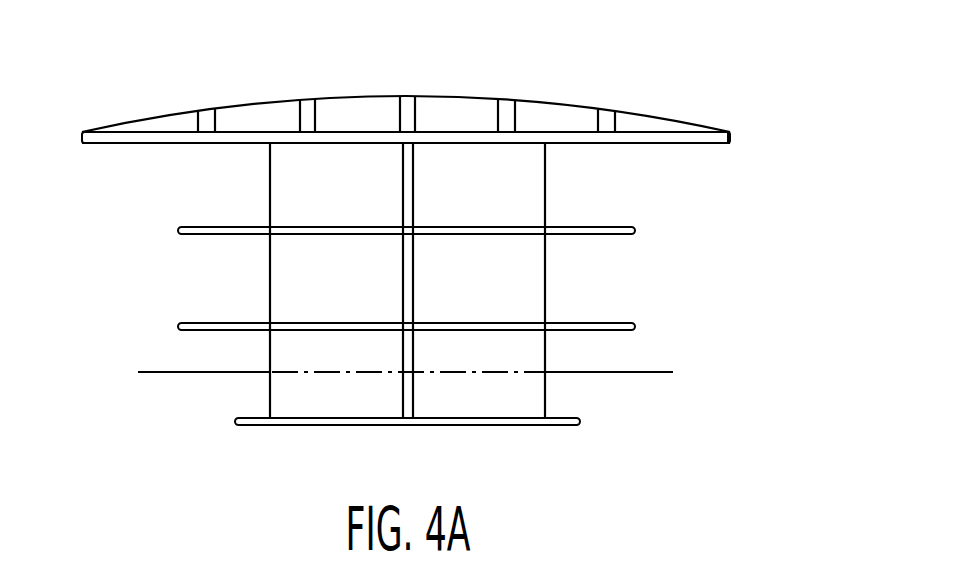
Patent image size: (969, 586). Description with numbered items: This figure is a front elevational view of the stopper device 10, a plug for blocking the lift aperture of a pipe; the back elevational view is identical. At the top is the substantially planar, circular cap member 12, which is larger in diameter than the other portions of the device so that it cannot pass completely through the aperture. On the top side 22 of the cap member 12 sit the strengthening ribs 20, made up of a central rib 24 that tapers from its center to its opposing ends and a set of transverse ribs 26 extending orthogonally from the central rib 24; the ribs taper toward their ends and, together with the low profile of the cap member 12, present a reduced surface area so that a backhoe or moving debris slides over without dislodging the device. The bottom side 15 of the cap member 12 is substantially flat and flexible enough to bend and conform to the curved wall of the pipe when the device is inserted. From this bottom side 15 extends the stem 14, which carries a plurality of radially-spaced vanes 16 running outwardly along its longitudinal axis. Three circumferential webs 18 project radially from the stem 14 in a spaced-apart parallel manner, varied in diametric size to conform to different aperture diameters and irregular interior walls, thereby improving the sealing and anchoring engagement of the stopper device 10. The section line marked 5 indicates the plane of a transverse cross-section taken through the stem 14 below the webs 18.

The stopper device 10 is at (706, 86).
The cap member 12 is at (736, 128).
The stem 14 is at (551, 192).
The bottom side 15 is at (675, 143).
The vanes 16 is at (415, 293).
The circumferential webs 18 is at (250, 418).
The strengthening ribs 20 is at (310, 96).
The top side 22 is at (235, 128).
The central rib 24 is at (468, 109).
The transverse ribs 26 is at (408, 108).
The section line 5- 5 is at (138, 372).